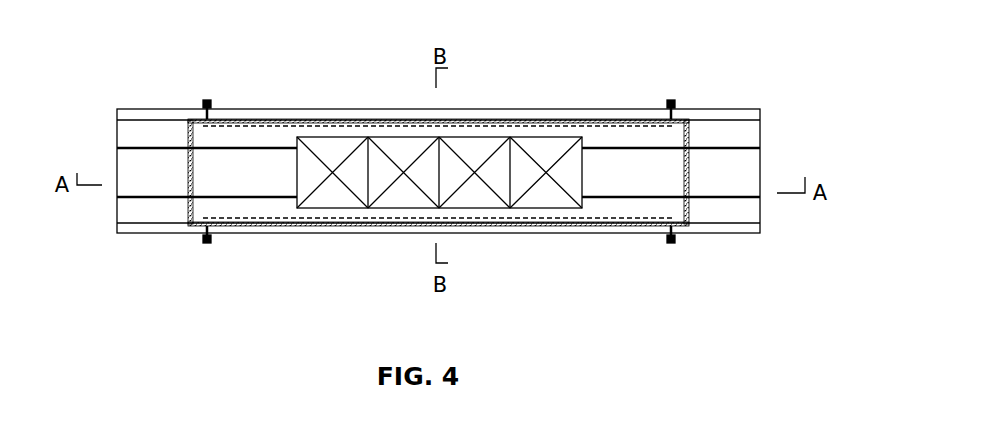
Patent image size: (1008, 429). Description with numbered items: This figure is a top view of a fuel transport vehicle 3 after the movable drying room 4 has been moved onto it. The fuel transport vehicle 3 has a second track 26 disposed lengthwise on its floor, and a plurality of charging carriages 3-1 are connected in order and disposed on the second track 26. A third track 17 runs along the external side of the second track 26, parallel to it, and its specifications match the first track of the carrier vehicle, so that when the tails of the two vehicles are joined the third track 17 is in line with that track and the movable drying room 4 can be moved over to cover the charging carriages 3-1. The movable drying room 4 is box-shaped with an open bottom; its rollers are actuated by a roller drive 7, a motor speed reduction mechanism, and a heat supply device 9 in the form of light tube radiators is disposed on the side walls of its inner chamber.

The fuel transport vehicle 3 is at (127, 167).
The charging carriage 3-1 is at (470, 147).
The movable drying room 4 is at (188, 208).
The roller drive 7 is at (207, 102).
The heat supply device 9 is at (275, 122).
The third track 17 is at (725, 120).
The second track 26 is at (742, 147).